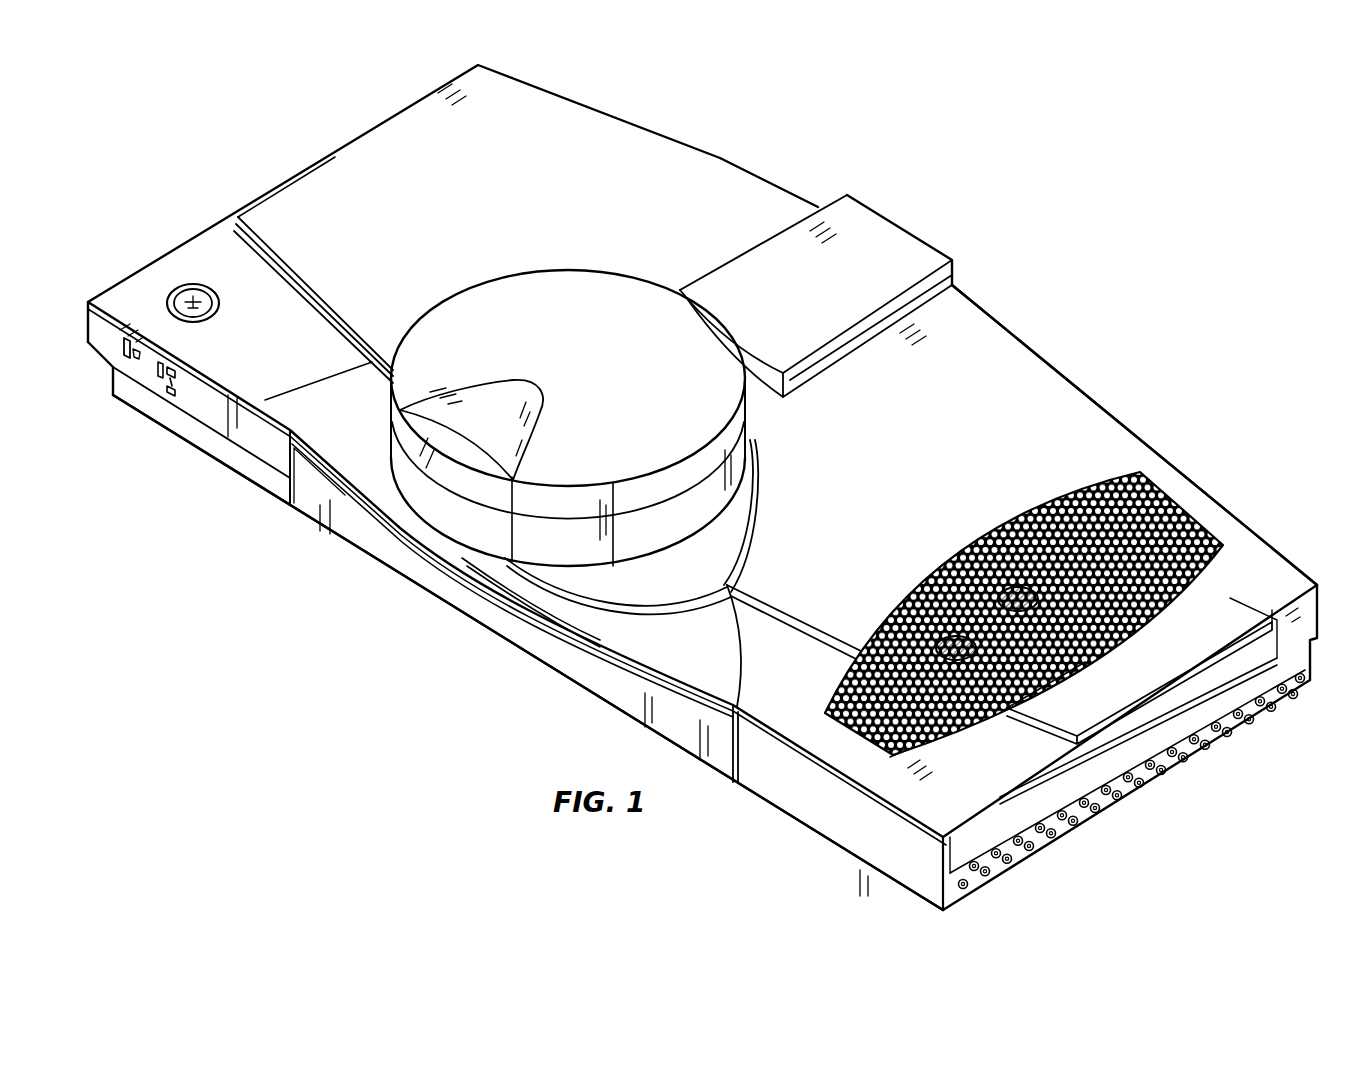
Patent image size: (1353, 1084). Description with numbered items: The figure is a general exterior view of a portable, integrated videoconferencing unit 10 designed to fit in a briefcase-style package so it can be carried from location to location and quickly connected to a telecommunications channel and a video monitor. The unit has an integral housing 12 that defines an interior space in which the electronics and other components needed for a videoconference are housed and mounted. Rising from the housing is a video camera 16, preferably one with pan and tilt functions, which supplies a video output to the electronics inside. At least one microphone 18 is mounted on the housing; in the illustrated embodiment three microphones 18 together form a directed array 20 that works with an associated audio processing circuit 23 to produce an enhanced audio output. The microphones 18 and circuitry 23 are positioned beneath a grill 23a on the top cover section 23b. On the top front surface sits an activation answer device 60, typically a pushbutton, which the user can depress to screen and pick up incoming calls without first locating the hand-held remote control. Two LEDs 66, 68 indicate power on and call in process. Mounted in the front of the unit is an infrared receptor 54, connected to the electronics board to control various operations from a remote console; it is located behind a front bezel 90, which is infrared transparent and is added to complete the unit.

The videoconferencing unit 10 is at (1158, 372).
The integral housing 12 is at (640, 122).
The video camera 16 is at (622, 371).
The microphone 18 is at (950, 637).
The directed array 20 is at (1168, 492).
The audio processing circuit 23 is at (995, 708).
The grill 23a is at (1077, 668).
The top cover section 23b is at (992, 328).
The receptor 54 is at (388, 557).
The activation answer device 60 is at (200, 290).
The LED 66 is at (128, 356).
The LED 68 is at (162, 378).
The front bezel 90 is at (548, 665).